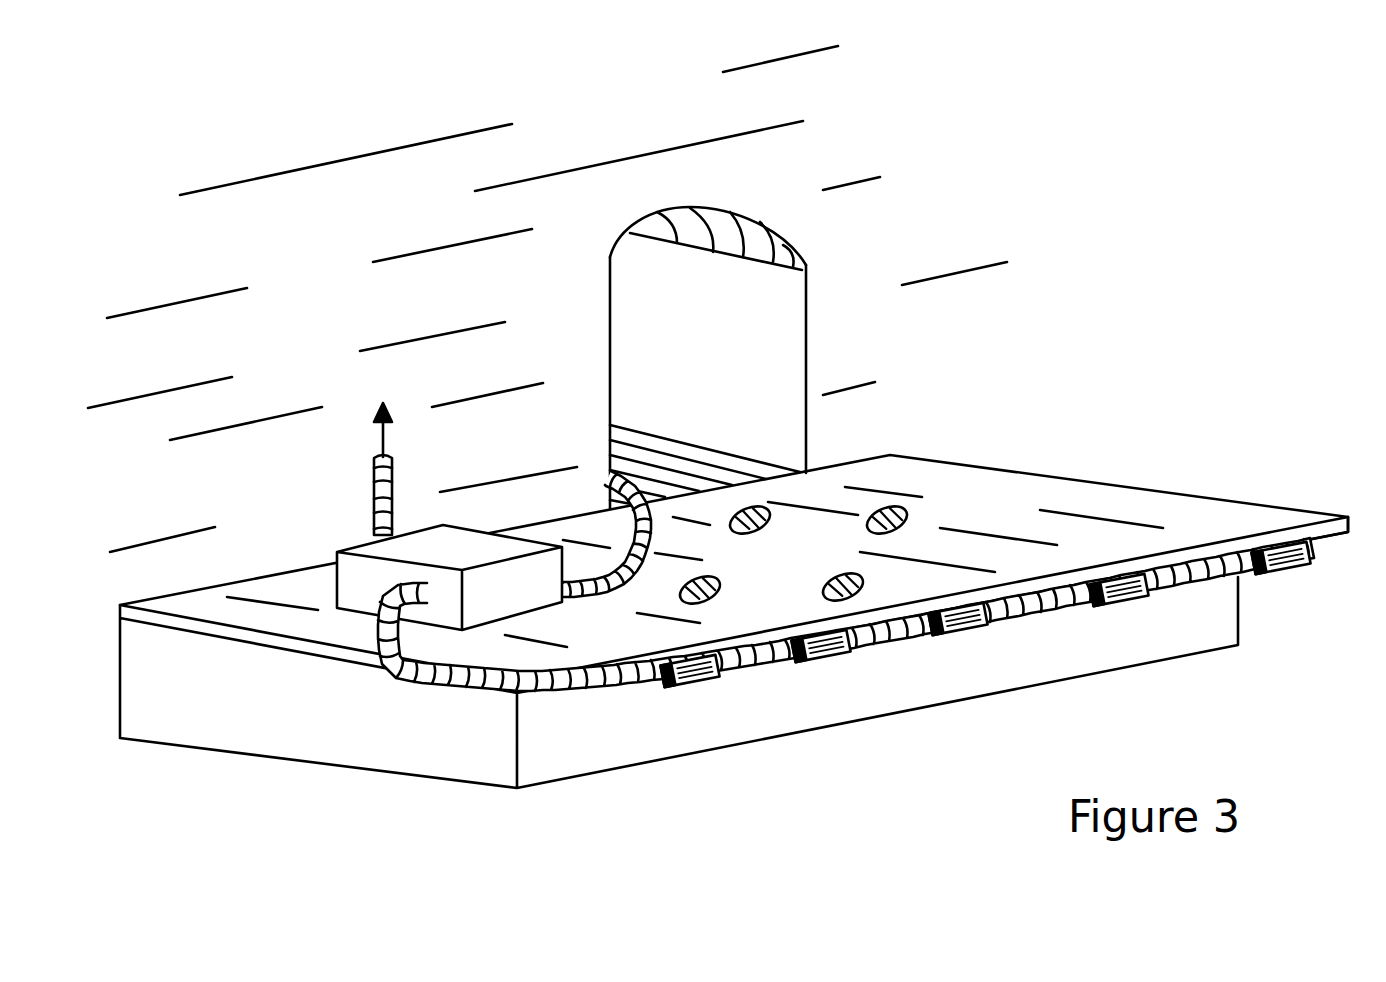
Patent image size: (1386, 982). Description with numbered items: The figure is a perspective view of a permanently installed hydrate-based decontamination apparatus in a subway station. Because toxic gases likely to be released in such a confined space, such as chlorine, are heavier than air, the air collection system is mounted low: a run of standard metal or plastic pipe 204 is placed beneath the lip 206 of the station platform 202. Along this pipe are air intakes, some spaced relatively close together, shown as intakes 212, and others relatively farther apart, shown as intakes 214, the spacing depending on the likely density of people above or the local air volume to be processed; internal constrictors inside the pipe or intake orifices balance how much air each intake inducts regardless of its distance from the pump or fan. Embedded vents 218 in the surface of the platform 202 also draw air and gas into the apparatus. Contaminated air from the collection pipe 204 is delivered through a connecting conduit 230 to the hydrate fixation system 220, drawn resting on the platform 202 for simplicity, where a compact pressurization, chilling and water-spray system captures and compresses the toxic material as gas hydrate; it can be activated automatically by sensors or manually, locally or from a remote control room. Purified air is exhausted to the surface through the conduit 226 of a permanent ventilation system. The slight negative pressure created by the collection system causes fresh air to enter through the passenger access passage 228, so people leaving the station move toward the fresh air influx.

The station platform 202 is at (1063, 500).
The pipe 204 is at (628, 693).
The lip 206 is at (1328, 537).
The intakes 212 is at (793, 658).
The intakes 214 is at (1245, 573).
The embedded vents 218 is at (763, 530).
The hydrate fixation system 220 is at (345, 550).
The conduit 226 is at (375, 478).
The access passages 228 is at (607, 307).
The conduit 230 is at (607, 592).